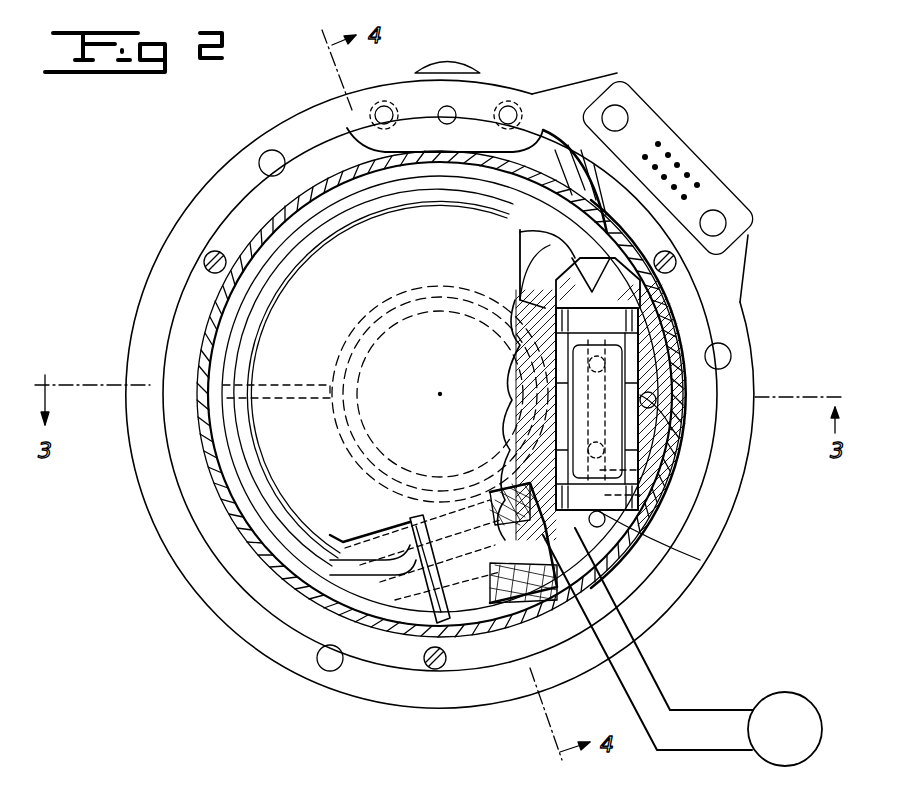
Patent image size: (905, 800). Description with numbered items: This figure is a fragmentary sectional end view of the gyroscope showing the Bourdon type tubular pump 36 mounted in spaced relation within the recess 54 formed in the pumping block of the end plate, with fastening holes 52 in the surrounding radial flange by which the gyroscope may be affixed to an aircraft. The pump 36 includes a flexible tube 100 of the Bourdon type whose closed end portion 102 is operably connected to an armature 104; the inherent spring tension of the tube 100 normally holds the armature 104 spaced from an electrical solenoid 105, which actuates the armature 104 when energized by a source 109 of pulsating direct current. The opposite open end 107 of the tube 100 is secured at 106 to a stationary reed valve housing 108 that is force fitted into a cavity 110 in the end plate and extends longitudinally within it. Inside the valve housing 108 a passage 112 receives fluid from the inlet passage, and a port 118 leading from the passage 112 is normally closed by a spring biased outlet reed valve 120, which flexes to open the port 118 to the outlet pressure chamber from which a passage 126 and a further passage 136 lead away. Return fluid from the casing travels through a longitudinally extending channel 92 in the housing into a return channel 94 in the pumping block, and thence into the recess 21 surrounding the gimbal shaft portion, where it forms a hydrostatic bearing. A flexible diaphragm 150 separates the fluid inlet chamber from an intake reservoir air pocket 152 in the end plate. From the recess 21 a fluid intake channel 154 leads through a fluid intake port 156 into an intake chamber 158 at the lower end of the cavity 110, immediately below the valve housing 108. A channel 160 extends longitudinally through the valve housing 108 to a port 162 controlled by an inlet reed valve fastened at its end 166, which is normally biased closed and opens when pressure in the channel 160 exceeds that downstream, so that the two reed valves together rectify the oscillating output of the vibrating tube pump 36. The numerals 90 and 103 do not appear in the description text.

The recess 21 is at (352, 455).
The tubular pump 36 is at (135, 548).
The fastening holes 52 is at (262, 155).
The recess 54 is at (282, 240).
The outer housing 90 is at (175, 452).
The channel 92 is at (285, 380).
The return channel 94 is at (287, 378).
The flexible tube 100 is at (255, 312).
The closed end portion 102 is at (410, 582).
The plate 103 is at (450, 580).
The armature 104 is at (405, 520).
The electrical solenoid 105 is at (503, 610).
The securing point 106 is at (605, 235).
The open end 107 is at (519, 233).
The stationary reed valve housing 108 is at (642, 316).
The source of pulsating direct current 109 is at (803, 697).
The cavity 110 is at (642, 328).
The passage 112 is at (520, 264).
The port 118 is at (690, 340).
The outlet reed valve 120 is at (625, 450).
The passage 126 is at (512, 392).
The passage 136 is at (655, 406).
The flexible diaphragm 150 is at (365, 367).
The intake reservoir air pocket 152 is at (365, 433).
The fluid intake channel 154 is at (520, 460).
The fluid intake port 156 is at (690, 555).
The intake chamber 158 is at (625, 605).
The channel 160 is at (645, 497).
The port 162 is at (645, 470).
The end 166 is at (680, 398).